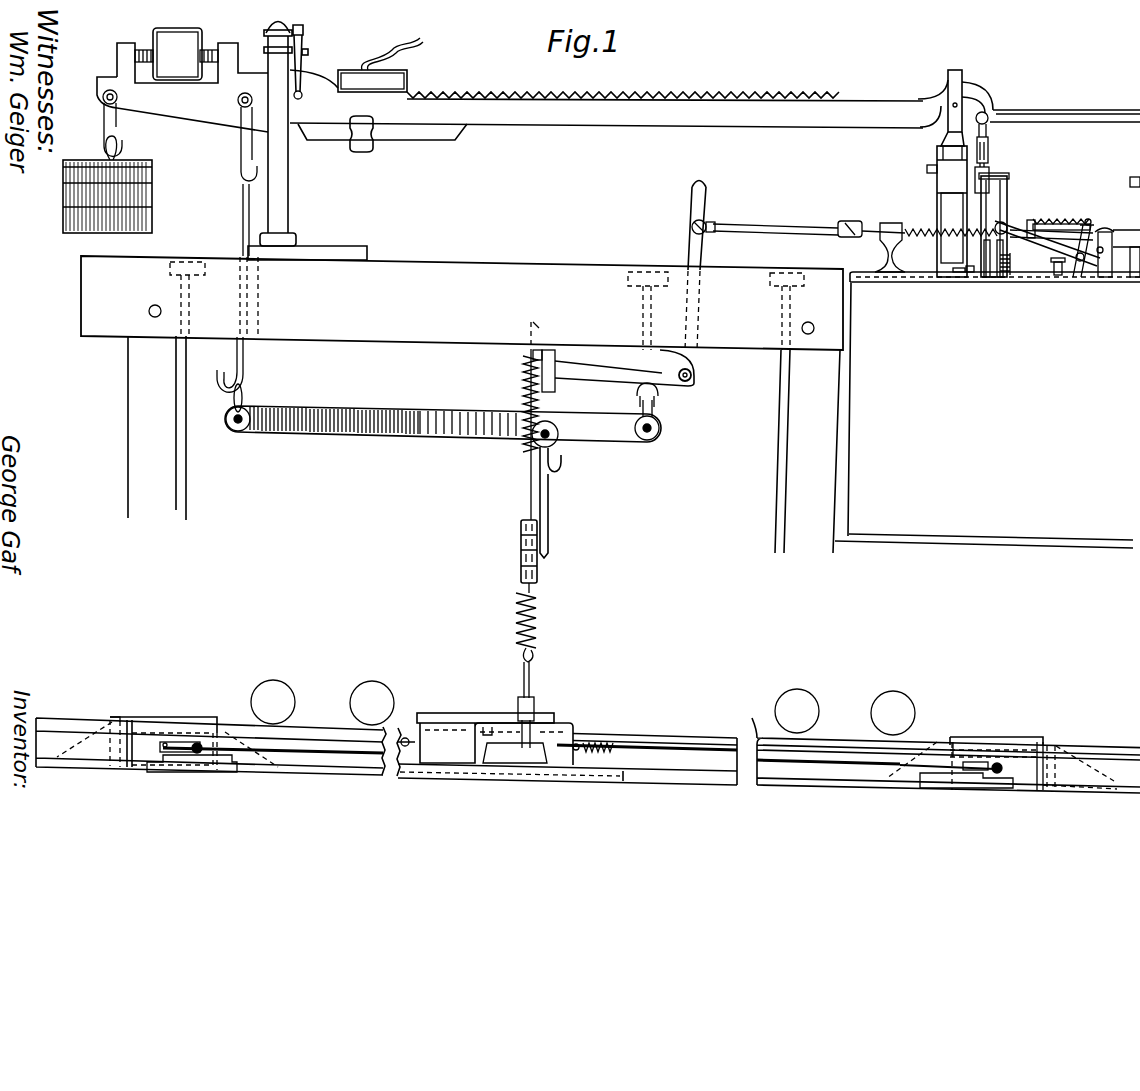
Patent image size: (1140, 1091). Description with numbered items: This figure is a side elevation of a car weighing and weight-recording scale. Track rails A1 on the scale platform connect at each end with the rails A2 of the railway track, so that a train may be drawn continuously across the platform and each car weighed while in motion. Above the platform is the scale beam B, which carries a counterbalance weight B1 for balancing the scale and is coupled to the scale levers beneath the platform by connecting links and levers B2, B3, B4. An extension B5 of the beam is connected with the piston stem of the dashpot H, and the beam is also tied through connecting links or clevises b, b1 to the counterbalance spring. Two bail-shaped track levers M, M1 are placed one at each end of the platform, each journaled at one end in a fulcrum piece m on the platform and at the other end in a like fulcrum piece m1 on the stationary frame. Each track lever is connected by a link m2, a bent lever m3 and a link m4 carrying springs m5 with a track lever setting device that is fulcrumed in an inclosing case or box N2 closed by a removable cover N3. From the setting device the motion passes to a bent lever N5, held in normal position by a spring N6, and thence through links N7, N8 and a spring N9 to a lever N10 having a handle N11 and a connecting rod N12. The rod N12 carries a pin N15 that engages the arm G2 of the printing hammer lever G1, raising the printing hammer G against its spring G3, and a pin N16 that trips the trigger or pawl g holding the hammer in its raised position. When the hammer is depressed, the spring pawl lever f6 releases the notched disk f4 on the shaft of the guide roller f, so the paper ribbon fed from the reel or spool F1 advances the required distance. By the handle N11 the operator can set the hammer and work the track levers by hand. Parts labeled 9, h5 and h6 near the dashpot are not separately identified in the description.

The scale beam B is at (522, 97).
The counterbalance weight B1 is at (192, 29).
The connecting link B2 is at (250, 347).
The connecting lever B3 is at (416, 441).
The connecting link B4 is at (551, 509).
The scale beam extension B5 is at (1075, 112).
The handle N11 is at (707, 187).
The connecting rod N12 is at (778, 224).
The spring N6 is at (526, 385).
The lever N10 is at (670, 384).
The link N8 is at (521, 537).
The spring N9 is at (540, 637).
The link N7 is at (520, 668).
The removable cover N3 is at (448, 713).
The inclosing case or box N2 is at (496, 744).
The bent lever N5 is at (520, 752).
The springs m5 is at (396, 753).
The link m4 is at (293, 757).
The bent lever m3 is at (185, 757).
The link m2 is at (165, 757).
The bearing or fulcrum piece m is at (222, 718).
The bearing or fulcrum piece m1 is at (110, 718).
The track lever M is at (990, 738).
The track lever M1 is at (176, 722).
The track rails A1 is at (143, 722).
The railway track rails A2 is at (73, 722).
The connecting link or clevis b is at (990, 153).
The connecting link or clevis b1 is at (992, 180).
The reel or spool F1 is at (1008, 201).
The printing hammer G is at (995, 224).
The printing hammer lever G1 is at (1048, 259).
The arm G2 is at (1081, 268).
The spring G3 is at (1052, 220).
The trigger or pawl g is at (1120, 278).
The pin 9 is at (1101, 247).
The dashpot H is at (1133, 180).
The bracket h5 is at (958, 275).
The bracket h6 is at (971, 278).
The guide spool or roller f is at (985, 256).
The notched disk f4 is at (1006, 276).
The spring pawl lever f6 is at (1003, 271).
The pin or projection N15 is at (1090, 217).
The pin or projection N16 is at (1134, 205).